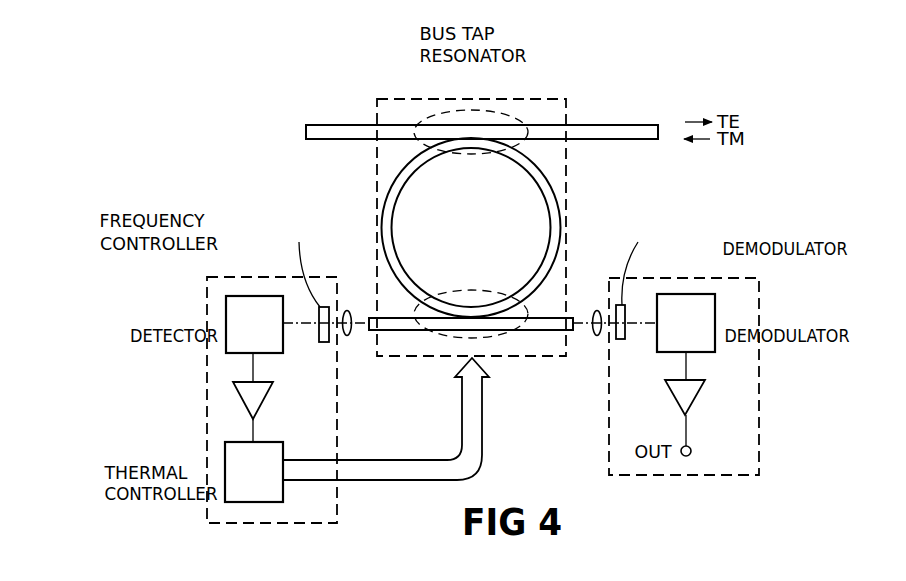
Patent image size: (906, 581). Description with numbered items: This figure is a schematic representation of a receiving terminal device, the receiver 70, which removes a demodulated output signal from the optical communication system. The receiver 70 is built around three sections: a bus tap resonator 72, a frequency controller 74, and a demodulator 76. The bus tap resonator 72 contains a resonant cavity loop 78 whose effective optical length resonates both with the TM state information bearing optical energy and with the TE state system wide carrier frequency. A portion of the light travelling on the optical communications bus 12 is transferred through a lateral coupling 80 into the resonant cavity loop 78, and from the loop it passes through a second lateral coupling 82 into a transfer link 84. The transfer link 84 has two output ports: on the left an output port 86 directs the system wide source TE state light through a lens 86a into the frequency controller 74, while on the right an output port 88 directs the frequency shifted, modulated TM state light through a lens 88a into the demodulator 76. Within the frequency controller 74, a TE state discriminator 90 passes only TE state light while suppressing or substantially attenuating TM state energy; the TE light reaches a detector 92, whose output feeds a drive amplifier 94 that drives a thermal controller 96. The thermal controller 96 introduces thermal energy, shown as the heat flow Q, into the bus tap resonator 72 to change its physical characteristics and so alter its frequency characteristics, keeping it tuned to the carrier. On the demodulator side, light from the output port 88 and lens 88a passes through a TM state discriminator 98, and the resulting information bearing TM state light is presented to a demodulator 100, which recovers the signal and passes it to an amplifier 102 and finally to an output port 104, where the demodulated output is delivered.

The optical communications bus 12 is at (608, 125).
The receiver 70 is at (698, 201).
The bus tap resonator 72 is at (443, 97).
The frequency controller 74 is at (207, 287).
The demodulator 76 is at (762, 282).
The resonant cavity loop 78 is at (543, 267).
The lateral coupling 80 is at (482, 158).
The lateral coupling 82 is at (475, 289).
The transfer link 84 is at (520, 331).
The output port 86 is at (367, 328).
The lens 86a is at (348, 310).
The output port 88 is at (575, 330).
The lens 88a is at (596, 310).
The TE state discriminator 90 is at (324, 343).
The detector 92 is at (245, 333).
The drive amplifier 94 is at (261, 393).
The thermal controller 96 is at (245, 486).
The TM state discriminator 98 is at (621, 340).
The demodulator 100 is at (672, 333).
The amplifier 102 is at (697, 398).
The output port 104 is at (692, 451).
The heat flow Q is at (477, 417).